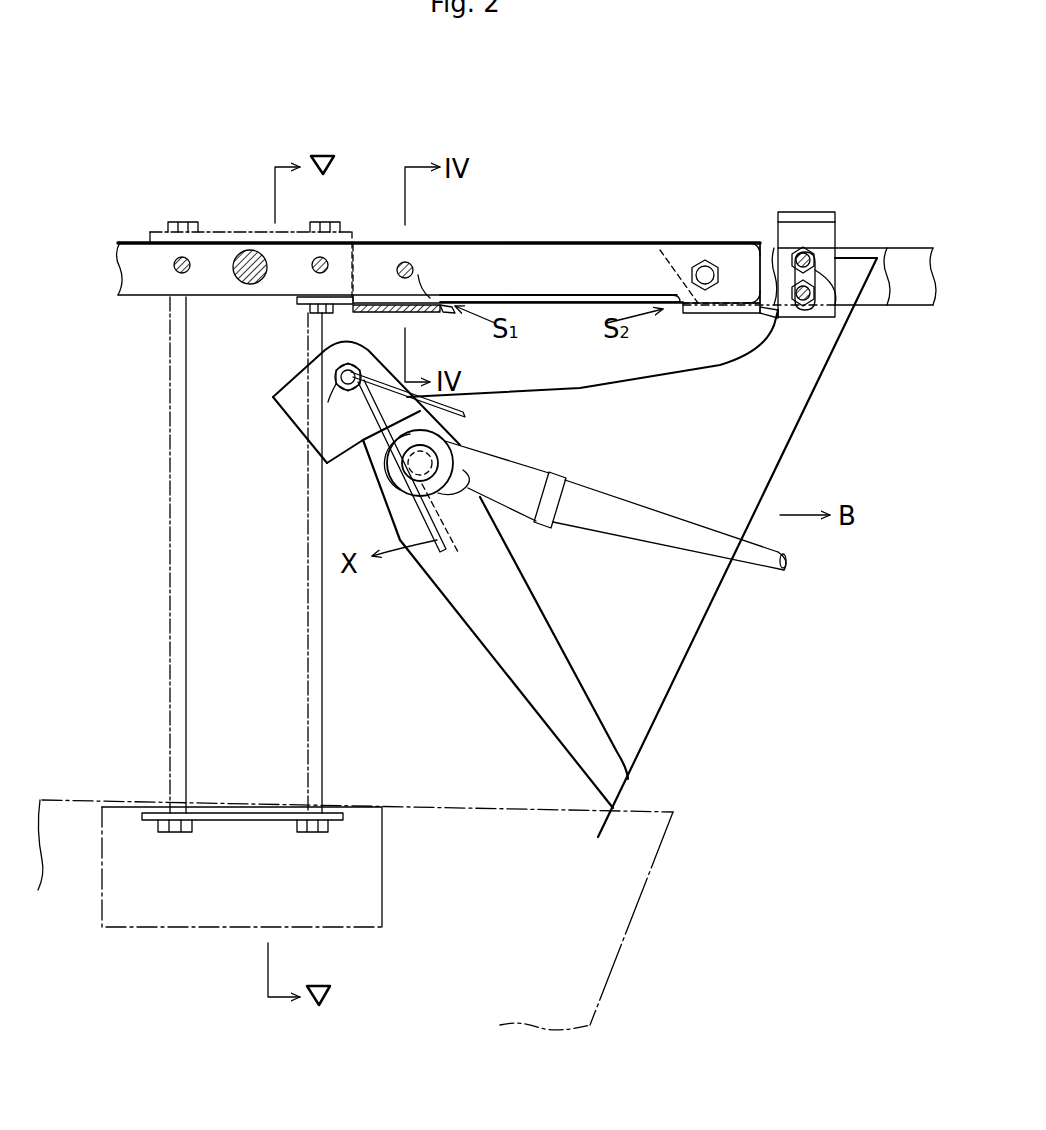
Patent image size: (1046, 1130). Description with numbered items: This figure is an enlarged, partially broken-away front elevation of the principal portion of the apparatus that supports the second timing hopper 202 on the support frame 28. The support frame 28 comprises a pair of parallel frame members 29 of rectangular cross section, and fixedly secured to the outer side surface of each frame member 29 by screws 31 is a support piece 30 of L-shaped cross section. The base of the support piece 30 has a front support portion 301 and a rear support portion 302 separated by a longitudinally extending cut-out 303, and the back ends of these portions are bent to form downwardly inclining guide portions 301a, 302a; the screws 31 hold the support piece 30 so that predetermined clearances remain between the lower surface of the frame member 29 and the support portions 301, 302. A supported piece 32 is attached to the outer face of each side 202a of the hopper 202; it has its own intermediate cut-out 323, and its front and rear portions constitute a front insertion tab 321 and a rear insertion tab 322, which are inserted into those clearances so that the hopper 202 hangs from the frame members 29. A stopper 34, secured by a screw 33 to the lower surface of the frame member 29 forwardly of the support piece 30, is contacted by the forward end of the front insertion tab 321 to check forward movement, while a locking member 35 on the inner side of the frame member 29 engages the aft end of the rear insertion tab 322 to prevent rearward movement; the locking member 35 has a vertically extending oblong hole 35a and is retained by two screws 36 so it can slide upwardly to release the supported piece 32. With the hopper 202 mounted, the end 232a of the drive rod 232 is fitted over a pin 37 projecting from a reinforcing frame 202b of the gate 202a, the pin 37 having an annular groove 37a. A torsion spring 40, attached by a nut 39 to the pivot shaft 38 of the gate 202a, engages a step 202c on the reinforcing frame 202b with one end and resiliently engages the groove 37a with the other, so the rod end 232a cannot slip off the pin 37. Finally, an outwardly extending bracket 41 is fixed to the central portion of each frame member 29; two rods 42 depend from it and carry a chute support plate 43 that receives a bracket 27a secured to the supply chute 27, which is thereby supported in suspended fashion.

The support frame 28 is at (150, 240).
The bracket 41 is at (248, 232).
The screw 31 is at (403, 262).
The front insertion tab 321 is at (430, 298).
The support piece 30 is at (520, 262).
The cut-out 303 is at (565, 291).
The rear insertion tab 322 is at (660, 250).
The locking member 35 is at (800, 212).
The screw 36 is at (810, 256).
The frame member 29 is at (867, 255).
The stopper 34 is at (300, 302).
The screw 33 is at (318, 313).
The pivot shaft 38 is at (335, 374).
The nut 39 is at (336, 384).
The reinforcing frame 202b is at (305, 420).
The front support portion 301 is at (410, 314).
The guide portion 301a is at (446, 316).
The cut-out 323 is at (554, 304).
The rear support portion 302 is at (604, 380).
The guide portion 302a is at (765, 316).
The oblong hole 35a is at (815, 276).
The supported piece 32 is at (603, 383).
The step 202c is at (466, 415).
The pin 37 is at (456, 456).
The gate 202a is at (796, 432).
The second timing hopper 202 is at (775, 477).
The torsion spring 40 is at (366, 446).
The annular groove 37a is at (443, 553).
The rod end 232a is at (541, 502).
The drive rod 232 is at (740, 562).
The rod 42 is at (170, 605).
The bracket 27a is at (235, 812).
The chute support plate 43 is at (245, 821).
The supply chute 27 is at (650, 852).